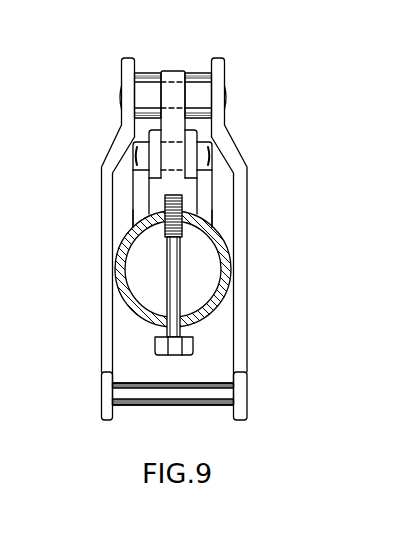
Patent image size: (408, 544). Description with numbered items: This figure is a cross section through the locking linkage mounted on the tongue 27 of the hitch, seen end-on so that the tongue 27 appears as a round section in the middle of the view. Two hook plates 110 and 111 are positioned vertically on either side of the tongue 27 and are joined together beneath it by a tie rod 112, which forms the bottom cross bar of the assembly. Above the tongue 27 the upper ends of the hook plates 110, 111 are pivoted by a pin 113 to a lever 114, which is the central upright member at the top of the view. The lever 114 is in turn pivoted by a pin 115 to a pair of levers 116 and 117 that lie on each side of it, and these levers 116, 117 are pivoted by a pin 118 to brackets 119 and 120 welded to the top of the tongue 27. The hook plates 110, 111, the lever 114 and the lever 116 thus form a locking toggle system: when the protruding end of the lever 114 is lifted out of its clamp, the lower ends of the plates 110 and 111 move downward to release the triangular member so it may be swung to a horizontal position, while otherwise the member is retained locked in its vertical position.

The tongue 27 is at (217, 310).
The hook plate 110 is at (242, 353).
The hook plate 111 is at (112, 353).
The tie rod 112 is at (172, 398).
The pin 113 is at (120, 94).
The lever 114 is at (173, 70).
The pin 115 is at (199, 158).
The lever 116 is at (199, 135).
The lever 117 is at (148, 138).
The pin 118 is at (133, 170).
The bracket 119 is at (149, 202).
The bracket 120 is at (197, 202).